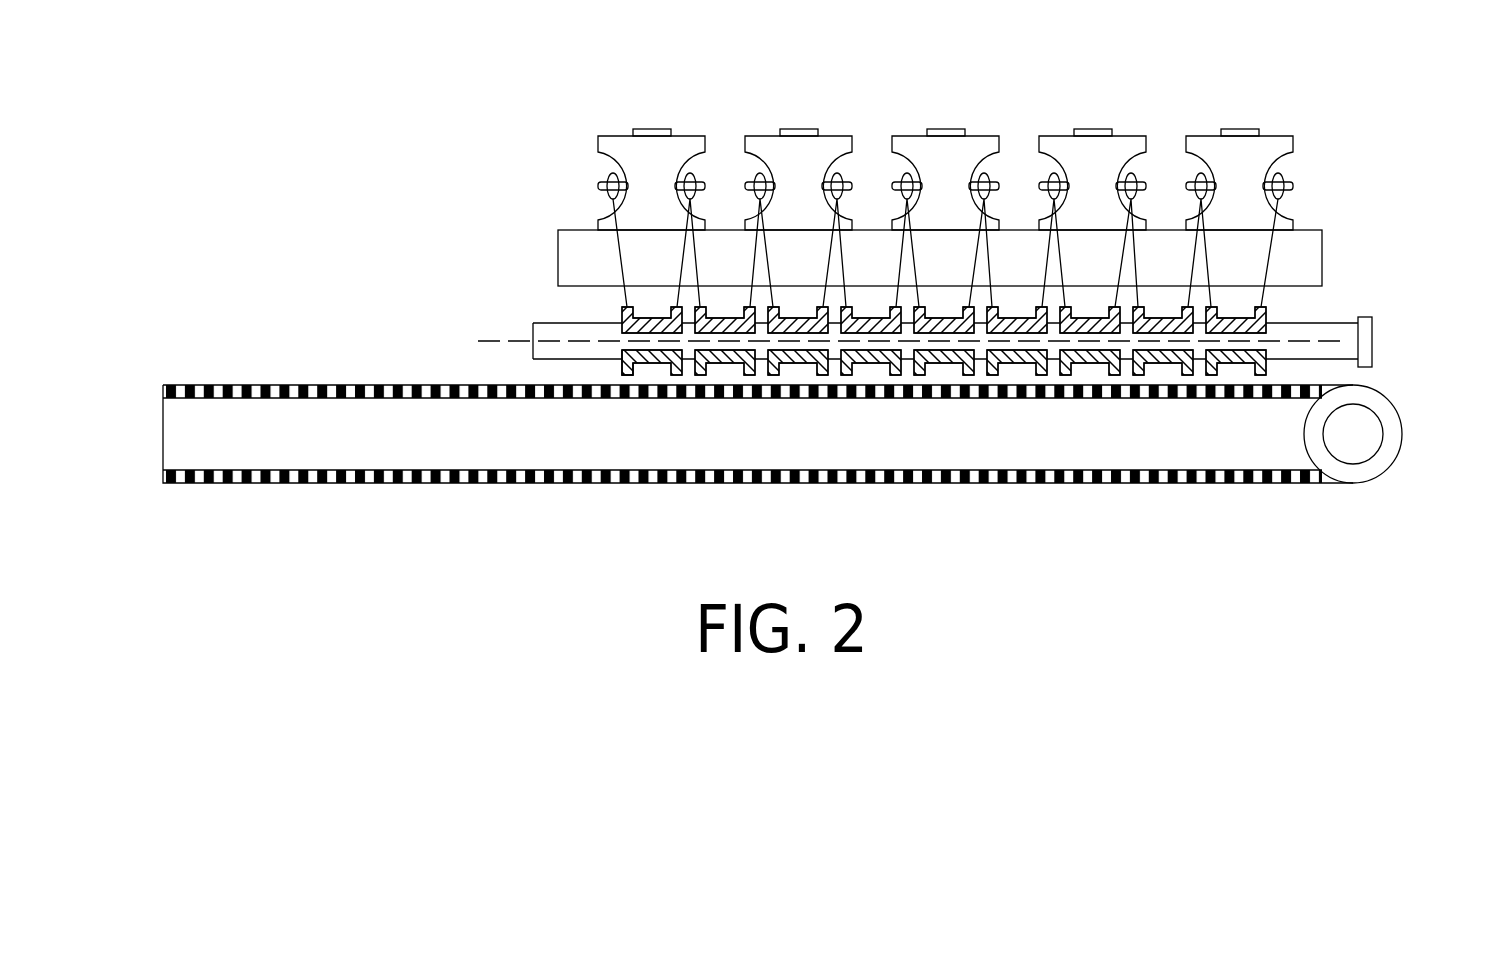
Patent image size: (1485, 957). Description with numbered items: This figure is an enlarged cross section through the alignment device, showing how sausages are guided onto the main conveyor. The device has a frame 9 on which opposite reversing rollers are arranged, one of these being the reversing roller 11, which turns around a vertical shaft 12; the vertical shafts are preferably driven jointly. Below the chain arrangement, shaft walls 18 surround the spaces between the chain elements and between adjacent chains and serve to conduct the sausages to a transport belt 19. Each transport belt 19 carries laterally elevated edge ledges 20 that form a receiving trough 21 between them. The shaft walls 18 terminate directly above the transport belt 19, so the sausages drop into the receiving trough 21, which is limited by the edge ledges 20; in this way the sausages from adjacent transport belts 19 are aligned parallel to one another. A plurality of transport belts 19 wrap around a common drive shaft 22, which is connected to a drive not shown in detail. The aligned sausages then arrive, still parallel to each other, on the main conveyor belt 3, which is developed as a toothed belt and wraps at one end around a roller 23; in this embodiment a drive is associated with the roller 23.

The main conveyor belt 3 is at (1214, 483).
The frame 9 is at (1323, 250).
The reversing roller 11 is at (1270, 143).
The vertical shaft 12 is at (1236, 128).
The shaft wall 18 is at (1210, 260).
The transport belt 19 is at (1222, 363).
The edge ledge 20 is at (1263, 309).
The receiving trough 21 is at (653, 365).
The drive shaft 22 is at (1343, 330).
The roller 23 is at (1370, 465).